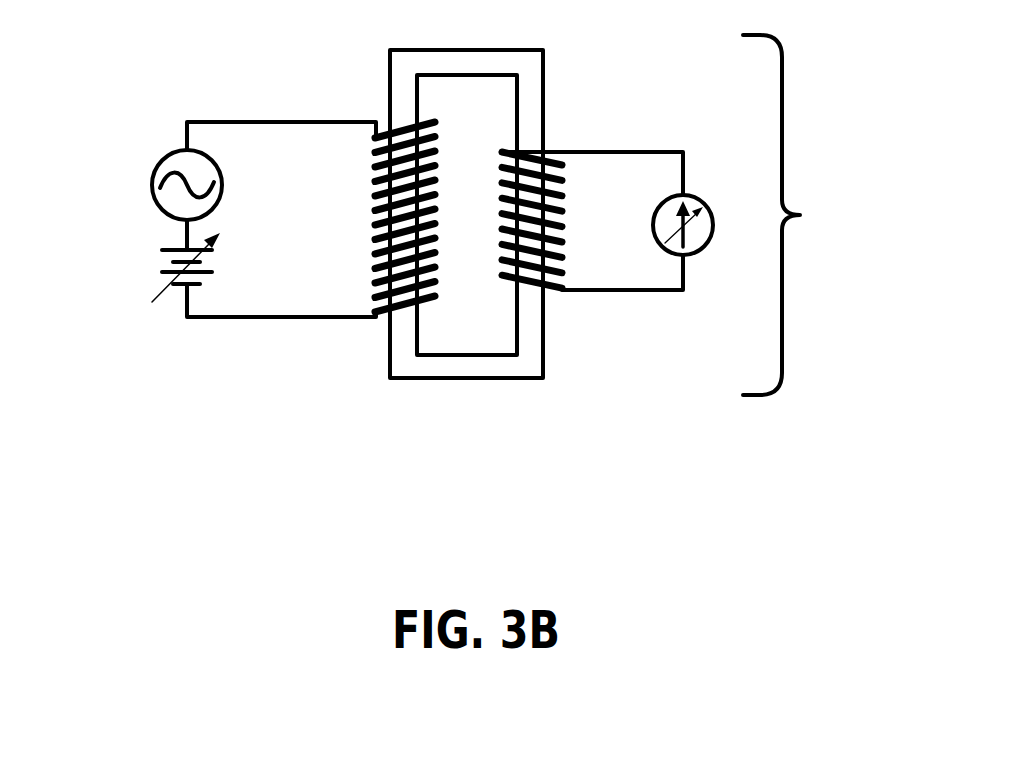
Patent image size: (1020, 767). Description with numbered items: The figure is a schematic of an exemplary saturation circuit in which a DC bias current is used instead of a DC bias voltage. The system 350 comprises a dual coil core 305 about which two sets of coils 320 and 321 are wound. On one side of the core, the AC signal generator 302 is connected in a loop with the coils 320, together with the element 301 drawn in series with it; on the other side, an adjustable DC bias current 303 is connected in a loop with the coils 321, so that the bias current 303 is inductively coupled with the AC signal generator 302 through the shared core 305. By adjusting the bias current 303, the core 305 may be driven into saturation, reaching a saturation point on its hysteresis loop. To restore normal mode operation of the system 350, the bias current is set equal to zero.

The variable DC voltage source (battery) 301 is at (167, 306).
The AC signal generator 302 is at (170, 143).
The adjustable DC bias current 303 is at (722, 256).
The dual coil core 305 is at (466, 392).
The coils 320 is at (368, 262).
The coils 321 is at (575, 310).
The system 350 is at (825, 215).